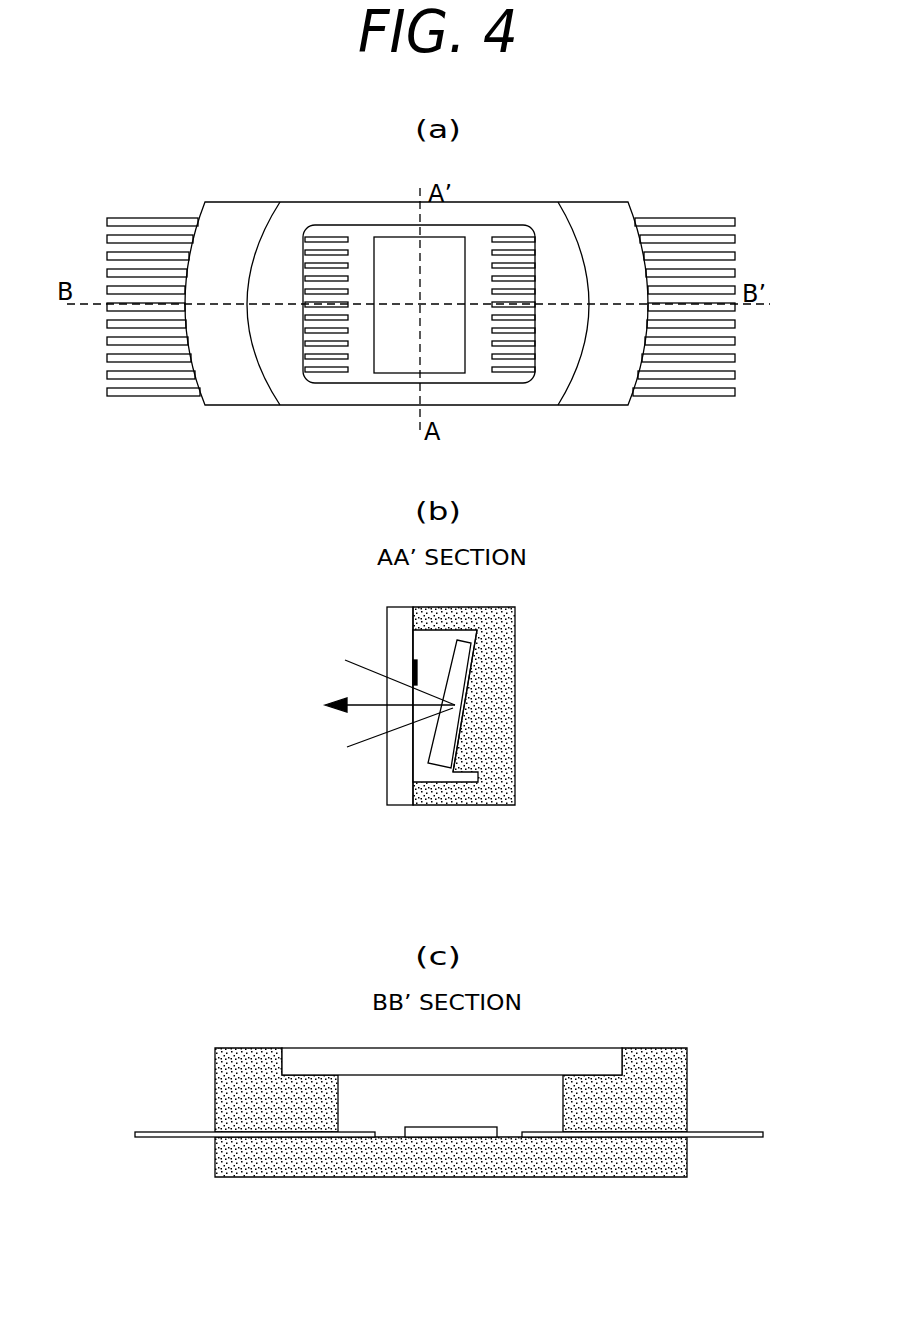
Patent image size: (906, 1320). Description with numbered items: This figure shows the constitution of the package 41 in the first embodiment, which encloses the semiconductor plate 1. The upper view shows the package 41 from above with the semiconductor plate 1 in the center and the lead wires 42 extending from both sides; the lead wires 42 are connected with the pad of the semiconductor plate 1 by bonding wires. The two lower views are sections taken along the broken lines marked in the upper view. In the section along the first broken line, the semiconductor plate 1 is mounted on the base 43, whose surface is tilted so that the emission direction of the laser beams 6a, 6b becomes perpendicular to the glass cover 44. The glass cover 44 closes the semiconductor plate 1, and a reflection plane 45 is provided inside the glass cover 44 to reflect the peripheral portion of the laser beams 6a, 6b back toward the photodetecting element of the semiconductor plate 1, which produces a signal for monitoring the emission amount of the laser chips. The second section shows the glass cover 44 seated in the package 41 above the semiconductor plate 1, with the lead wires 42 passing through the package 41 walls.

The semiconductor plate 1 is at (377, 236).
The package 41 is at (231, 202).
The lead wires 42 is at (134, 216).
The base 43 is at (462, 738).
The glass cover 44 is at (407, 806).
The reflection plane 45 is at (412, 668).
The laser beam 6a is at (355, 757).
The laser beam 6b is at (340, 712).